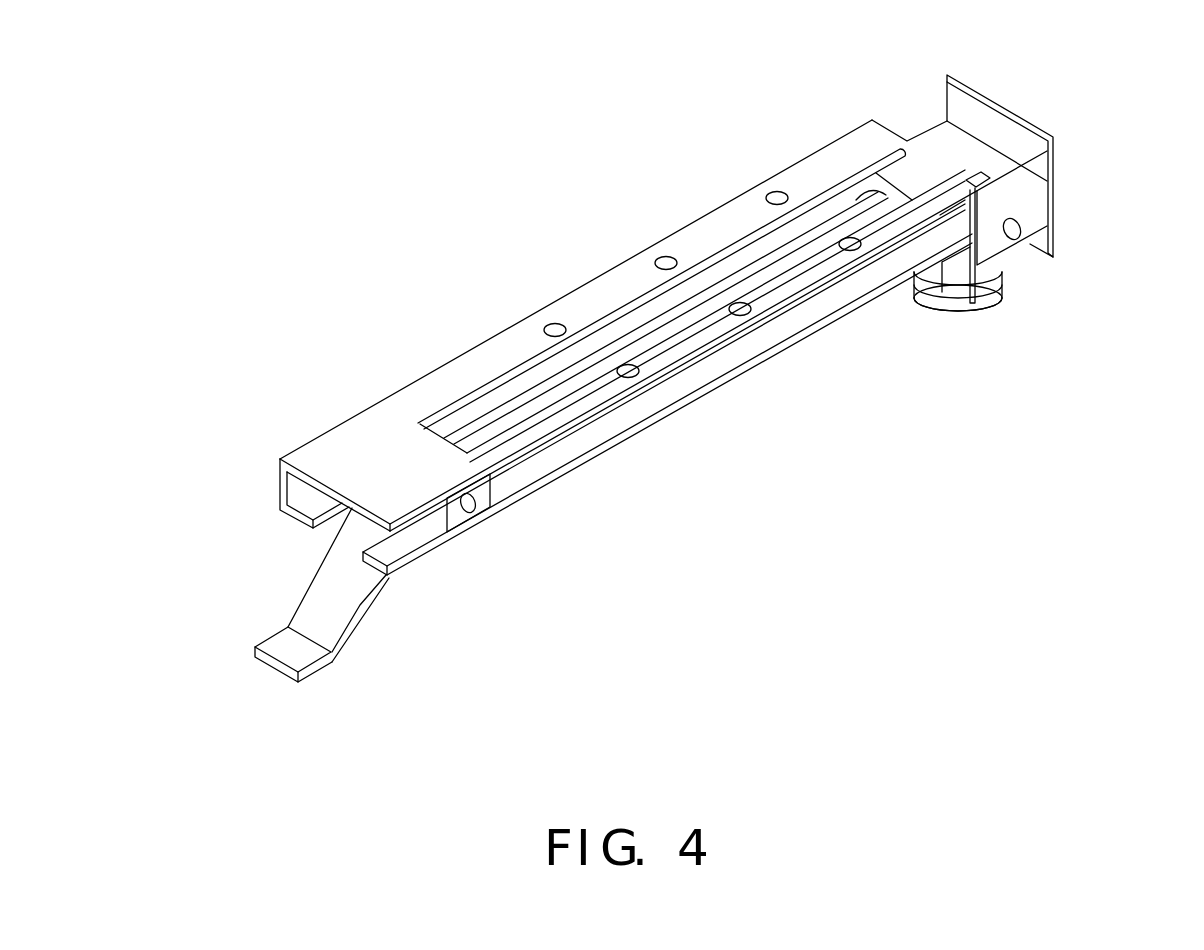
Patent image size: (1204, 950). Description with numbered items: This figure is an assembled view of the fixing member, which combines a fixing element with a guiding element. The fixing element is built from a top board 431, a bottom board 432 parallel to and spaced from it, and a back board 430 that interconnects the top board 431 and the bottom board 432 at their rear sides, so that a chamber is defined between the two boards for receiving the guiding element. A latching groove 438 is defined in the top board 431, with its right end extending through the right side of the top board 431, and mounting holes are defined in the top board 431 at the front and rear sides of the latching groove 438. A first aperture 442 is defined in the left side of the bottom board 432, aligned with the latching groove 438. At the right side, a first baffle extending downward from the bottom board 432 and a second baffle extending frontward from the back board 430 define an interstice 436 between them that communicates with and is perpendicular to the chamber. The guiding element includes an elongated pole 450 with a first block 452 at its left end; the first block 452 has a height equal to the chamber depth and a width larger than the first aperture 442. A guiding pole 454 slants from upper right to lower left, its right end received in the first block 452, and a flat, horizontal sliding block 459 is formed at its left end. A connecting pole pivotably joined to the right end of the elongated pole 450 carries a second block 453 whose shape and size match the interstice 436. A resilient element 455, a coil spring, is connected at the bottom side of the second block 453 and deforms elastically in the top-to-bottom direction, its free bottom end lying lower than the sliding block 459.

The back board 430 is at (293, 485).
The top board 431 is at (355, 455).
The bottom board 432 is at (723, 358).
The interstice 436 is at (912, 115).
The latching groove 438 is at (765, 257).
The first aperture 442 is at (327, 537).
The elongated pole 450 is at (513, 403).
The first block 452 is at (437, 513).
The second block 453 is at (1037, 217).
The guiding pole 454 is at (328, 603).
The resilient element 455 is at (1007, 283).
The sliding block 459 is at (280, 643).